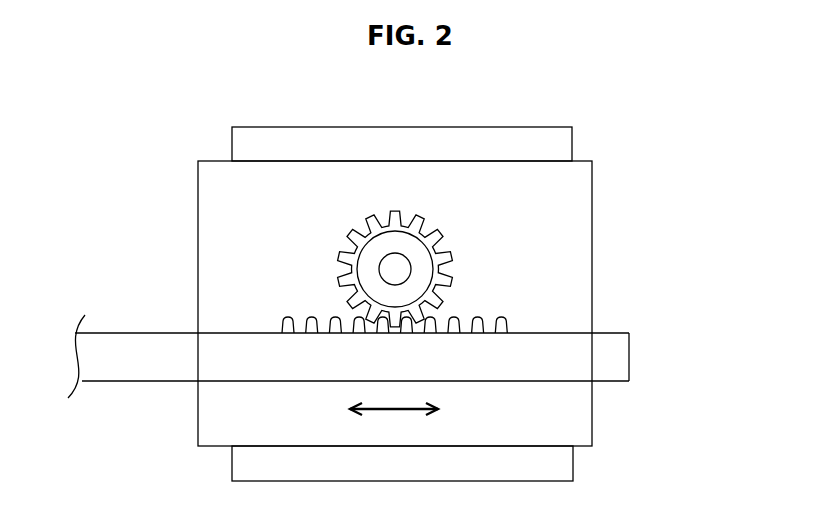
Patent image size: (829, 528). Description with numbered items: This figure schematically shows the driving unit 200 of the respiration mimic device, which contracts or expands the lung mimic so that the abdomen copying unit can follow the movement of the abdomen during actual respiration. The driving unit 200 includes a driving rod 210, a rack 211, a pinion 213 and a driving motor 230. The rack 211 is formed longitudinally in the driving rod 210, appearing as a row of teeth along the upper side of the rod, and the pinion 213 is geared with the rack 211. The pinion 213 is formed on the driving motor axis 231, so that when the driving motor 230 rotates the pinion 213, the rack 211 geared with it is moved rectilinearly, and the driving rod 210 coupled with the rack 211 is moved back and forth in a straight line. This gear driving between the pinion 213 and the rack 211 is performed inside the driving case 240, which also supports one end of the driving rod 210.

The driving unit 200 is at (727, 94).
The driving rod 210 is at (629, 357).
The rack 211 is at (502, 330).
The pinion 213 is at (448, 280).
The driving motor axis 231 is at (397, 268).
The driving case 240 is at (592, 413).
The driving motor 230 is at (573, 465).